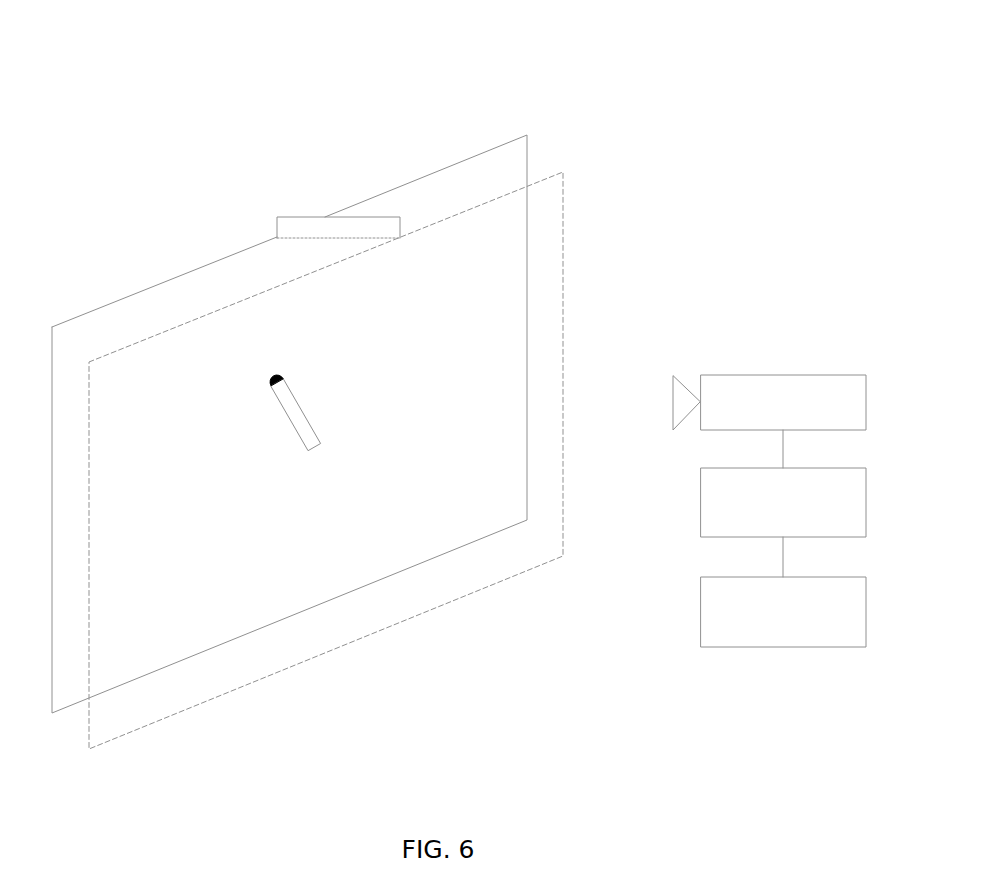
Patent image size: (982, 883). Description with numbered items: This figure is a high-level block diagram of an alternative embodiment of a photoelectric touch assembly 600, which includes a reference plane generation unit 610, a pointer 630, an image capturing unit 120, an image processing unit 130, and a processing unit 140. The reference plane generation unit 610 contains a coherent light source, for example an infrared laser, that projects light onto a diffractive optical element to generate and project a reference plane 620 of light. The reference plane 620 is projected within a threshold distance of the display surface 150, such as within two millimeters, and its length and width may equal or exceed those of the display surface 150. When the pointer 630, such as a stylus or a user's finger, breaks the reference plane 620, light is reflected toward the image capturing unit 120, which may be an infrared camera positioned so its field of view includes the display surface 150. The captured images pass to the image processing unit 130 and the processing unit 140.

The photoelectric touch assembly 600 is at (352, 33).
The display surface 150 is at (505, 142).
The reference plane generation unit 610 is at (300, 217).
The reference plane 620 is at (142, 725).
The pointer 630 is at (312, 452).
The image capturing unit 120 is at (783, 375).
The image processing unit 130 is at (768, 533).
The processing unit 140 is at (768, 631).